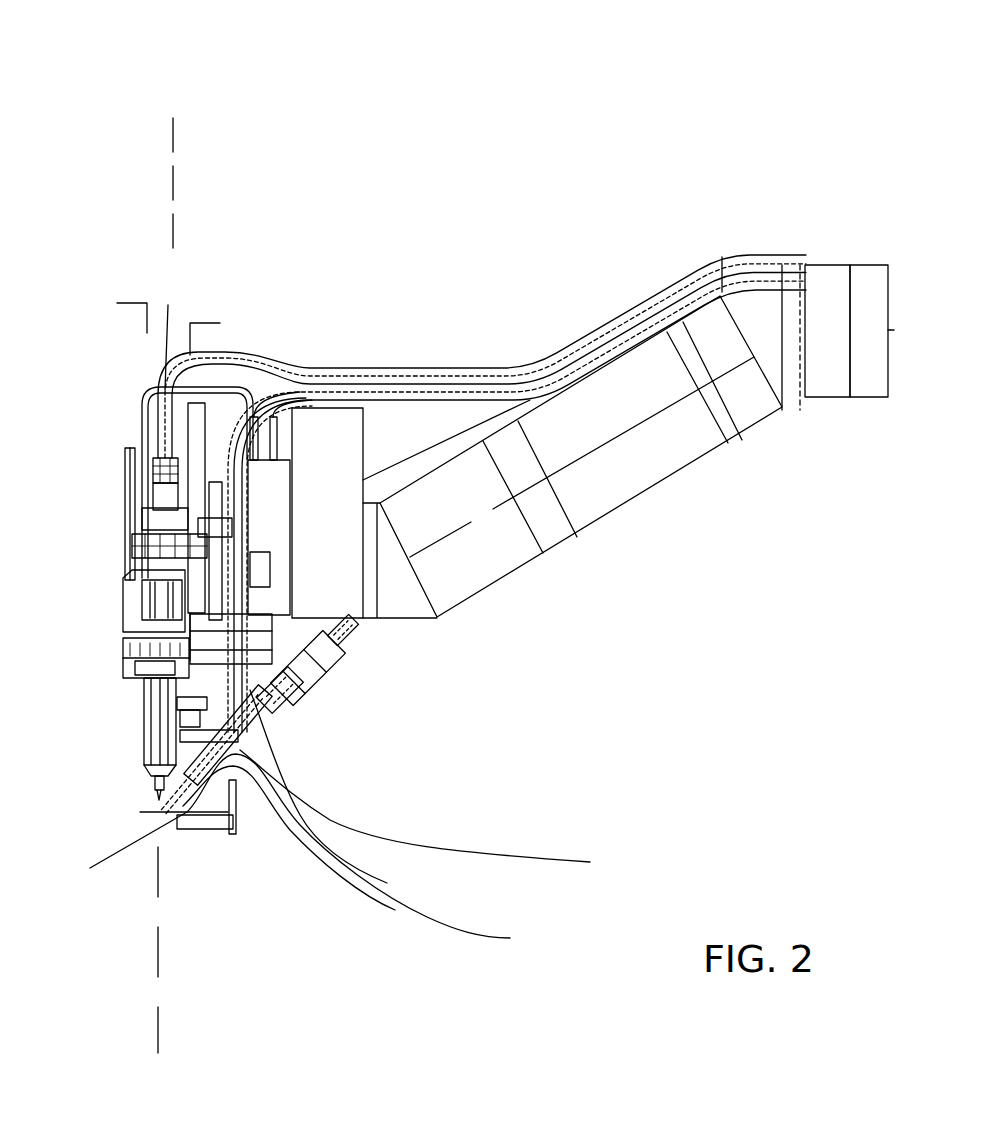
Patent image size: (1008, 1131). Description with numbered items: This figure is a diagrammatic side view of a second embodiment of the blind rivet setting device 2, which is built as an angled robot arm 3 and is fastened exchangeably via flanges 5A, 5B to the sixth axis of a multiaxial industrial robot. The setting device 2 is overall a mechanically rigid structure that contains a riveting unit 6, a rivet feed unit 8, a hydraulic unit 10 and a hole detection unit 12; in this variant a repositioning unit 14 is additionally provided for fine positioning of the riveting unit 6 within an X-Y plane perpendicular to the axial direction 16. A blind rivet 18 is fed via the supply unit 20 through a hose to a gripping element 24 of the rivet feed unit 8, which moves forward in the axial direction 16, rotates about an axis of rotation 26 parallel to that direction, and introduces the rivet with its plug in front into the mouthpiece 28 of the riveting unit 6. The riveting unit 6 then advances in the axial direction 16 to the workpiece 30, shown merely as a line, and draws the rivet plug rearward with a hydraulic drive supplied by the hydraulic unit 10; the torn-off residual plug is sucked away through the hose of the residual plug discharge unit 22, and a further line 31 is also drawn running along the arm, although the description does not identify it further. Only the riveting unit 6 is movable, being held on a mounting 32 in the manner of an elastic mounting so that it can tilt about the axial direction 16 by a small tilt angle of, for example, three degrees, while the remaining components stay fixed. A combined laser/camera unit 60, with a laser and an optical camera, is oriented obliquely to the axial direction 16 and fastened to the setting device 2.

The blind rivet setting device 2 is at (548, 133).
The angled robot arm 3 is at (586, 322).
The flange 5A is at (825, 380).
The flange 5B is at (867, 387).
The riveting unit 6 is at (103, 632).
The rivet feed unit 8 is at (150, 700).
The hydraulic unit 10 is at (607, 467).
The hole detection unit 12 is at (318, 691).
The repositioning unit 14 is at (330, 427).
The axial direction 16 is at (160, 973).
The blind rivet 18 is at (147, 770).
The supply unit 20 is at (338, 798).
The residual plug discharge unit 22 is at (228, 350).
The gripping element 24 is at (210, 830).
The axis of rotation 26 is at (322, 855).
The mouthpiece 28 is at (143, 762).
The workpiece 30 is at (150, 813).
The hose 31 is at (322, 340).
The mounting 32 is at (325, 665).
The combined laser/camera unit 60 is at (438, 814).